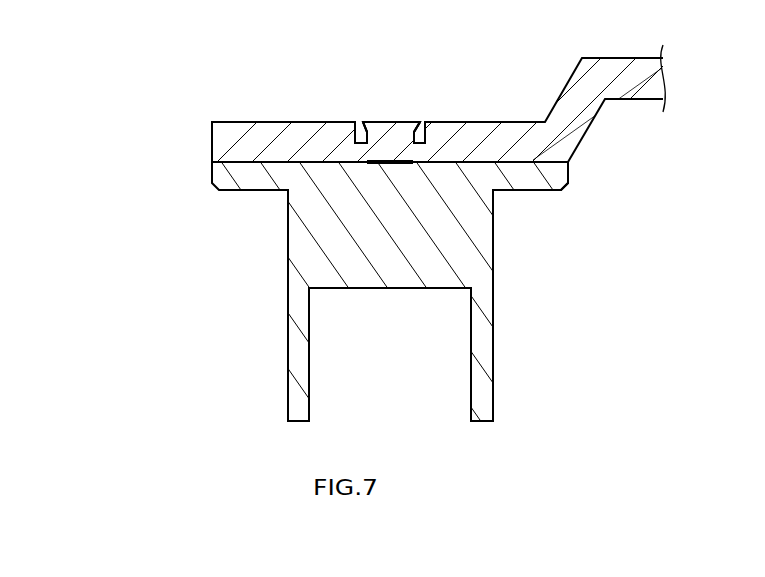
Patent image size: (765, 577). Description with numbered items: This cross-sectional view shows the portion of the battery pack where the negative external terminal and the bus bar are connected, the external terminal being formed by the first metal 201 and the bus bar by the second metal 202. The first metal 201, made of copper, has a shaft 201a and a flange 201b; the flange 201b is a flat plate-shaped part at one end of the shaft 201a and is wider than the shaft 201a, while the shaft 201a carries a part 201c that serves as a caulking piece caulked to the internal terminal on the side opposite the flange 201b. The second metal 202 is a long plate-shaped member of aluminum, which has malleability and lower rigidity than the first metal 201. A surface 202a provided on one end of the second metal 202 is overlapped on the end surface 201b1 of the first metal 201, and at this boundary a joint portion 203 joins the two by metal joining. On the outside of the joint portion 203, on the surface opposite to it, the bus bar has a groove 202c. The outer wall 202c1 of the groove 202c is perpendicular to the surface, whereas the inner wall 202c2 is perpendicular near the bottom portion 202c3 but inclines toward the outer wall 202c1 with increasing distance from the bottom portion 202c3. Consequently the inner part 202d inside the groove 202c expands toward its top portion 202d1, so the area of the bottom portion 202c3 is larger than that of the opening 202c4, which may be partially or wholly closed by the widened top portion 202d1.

The first metal 201 is at (525, 316).
The shaft 201a is at (288, 262).
The flange 201b is at (570, 174).
The end surface 201b1 is at (233, 152).
The caulking part 201c is at (288, 329).
The second metal 202 is at (186, 135).
The surface 202a is at (242, 172).
The groove 202c is at (427, 158).
The outer wall 202c1 is at (346, 130).
The inner wall 202c2 is at (376, 135).
The bottom portion 202c3 is at (351, 153).
The opening 202c4 is at (357, 113).
The inner part 202d is at (380, 77).
The top portion 202d1 is at (411, 114).
The joint portion 203 is at (382, 170).